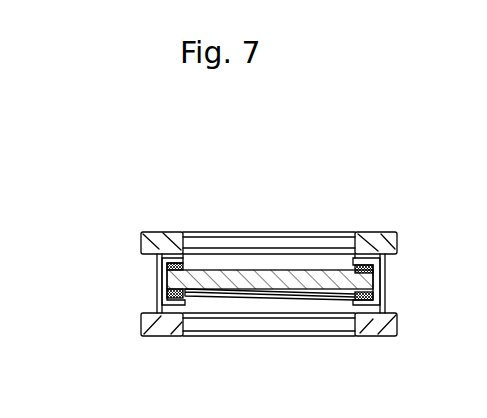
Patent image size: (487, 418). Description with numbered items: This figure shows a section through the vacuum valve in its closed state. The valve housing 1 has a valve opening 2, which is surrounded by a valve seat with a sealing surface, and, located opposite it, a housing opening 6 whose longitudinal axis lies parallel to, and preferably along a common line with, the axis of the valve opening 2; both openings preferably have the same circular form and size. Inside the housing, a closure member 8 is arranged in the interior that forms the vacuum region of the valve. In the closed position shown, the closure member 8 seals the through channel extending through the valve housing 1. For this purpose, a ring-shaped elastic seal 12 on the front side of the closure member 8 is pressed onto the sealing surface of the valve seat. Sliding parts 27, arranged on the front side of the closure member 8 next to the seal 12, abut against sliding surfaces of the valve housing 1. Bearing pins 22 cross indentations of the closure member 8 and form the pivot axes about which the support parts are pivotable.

The valve housing 1 is at (417, 247).
The valve opening 2 is at (275, 238).
The housing opening 6 is at (307, 330).
The closure member 8 is at (303, 276).
The elastic seal 12 is at (179, 262).
The bearing pin 22 is at (168, 296).
The sliding part 27 is at (168, 264).